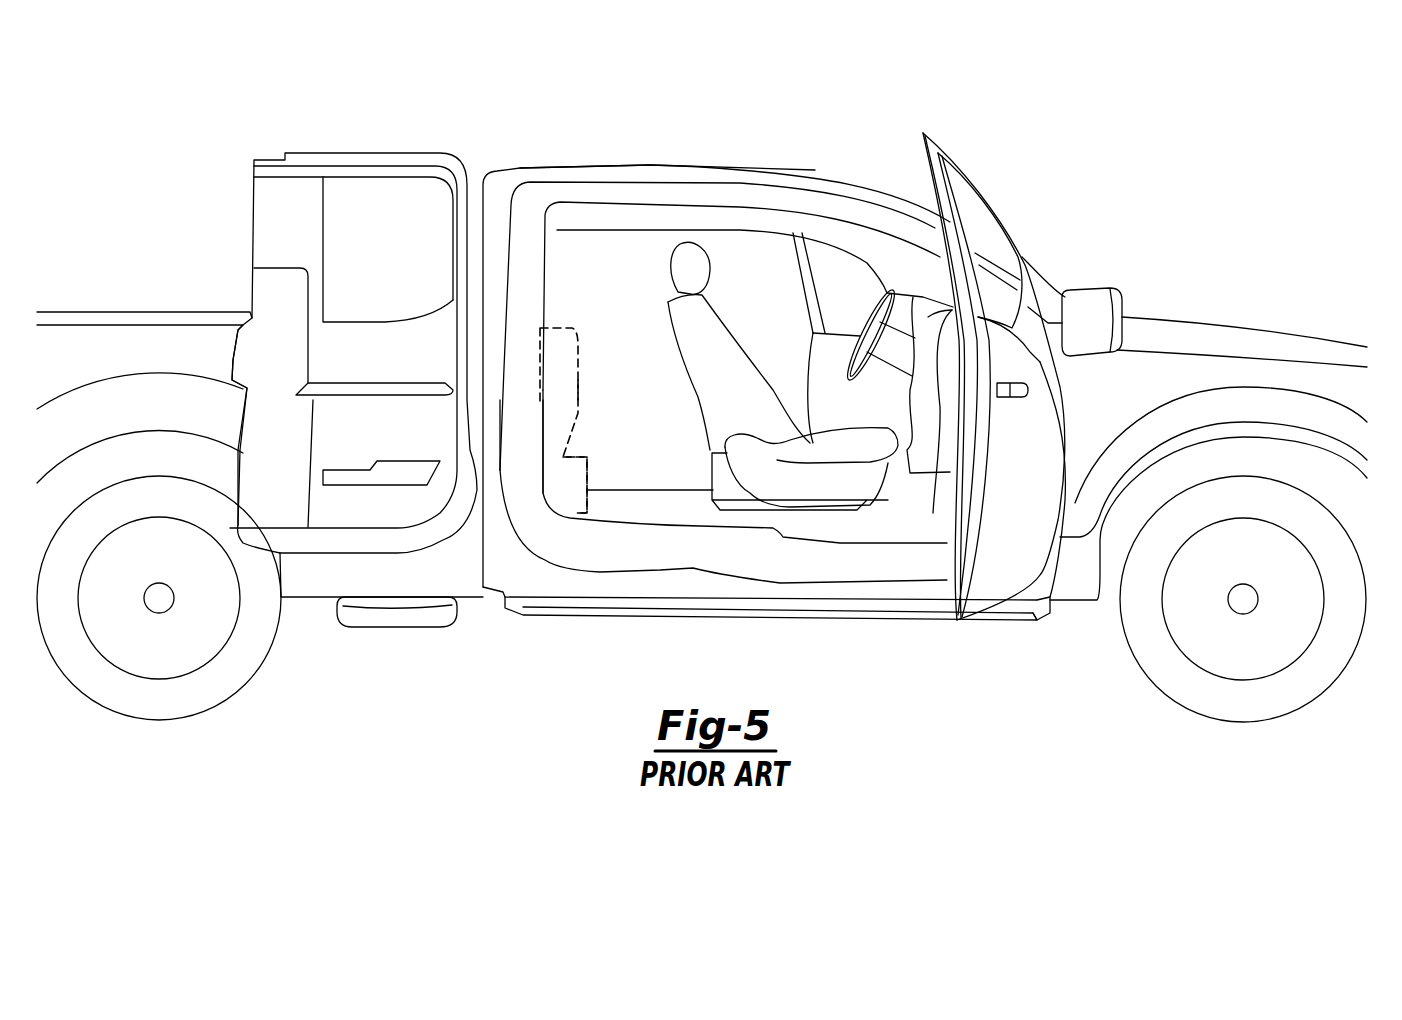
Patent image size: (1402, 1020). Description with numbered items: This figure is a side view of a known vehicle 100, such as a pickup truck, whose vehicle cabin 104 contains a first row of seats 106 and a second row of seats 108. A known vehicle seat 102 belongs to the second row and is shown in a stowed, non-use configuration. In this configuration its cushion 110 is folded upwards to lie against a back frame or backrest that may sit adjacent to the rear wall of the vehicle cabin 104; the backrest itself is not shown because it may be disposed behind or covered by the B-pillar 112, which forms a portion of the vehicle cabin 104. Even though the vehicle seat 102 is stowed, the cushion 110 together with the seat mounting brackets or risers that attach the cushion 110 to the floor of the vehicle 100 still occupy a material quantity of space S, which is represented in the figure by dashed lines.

The vehicle 100 is at (158, 131).
The vehicle seat 102 is at (583, 518).
The vehicle cabin 104 is at (592, 247).
The first row of seats 106 is at (843, 523).
The second row of seats 108 is at (583, 522).
The cushion 110 is at (562, 353).
The B-pillar 112 is at (517, 373).
The space S is at (580, 390).